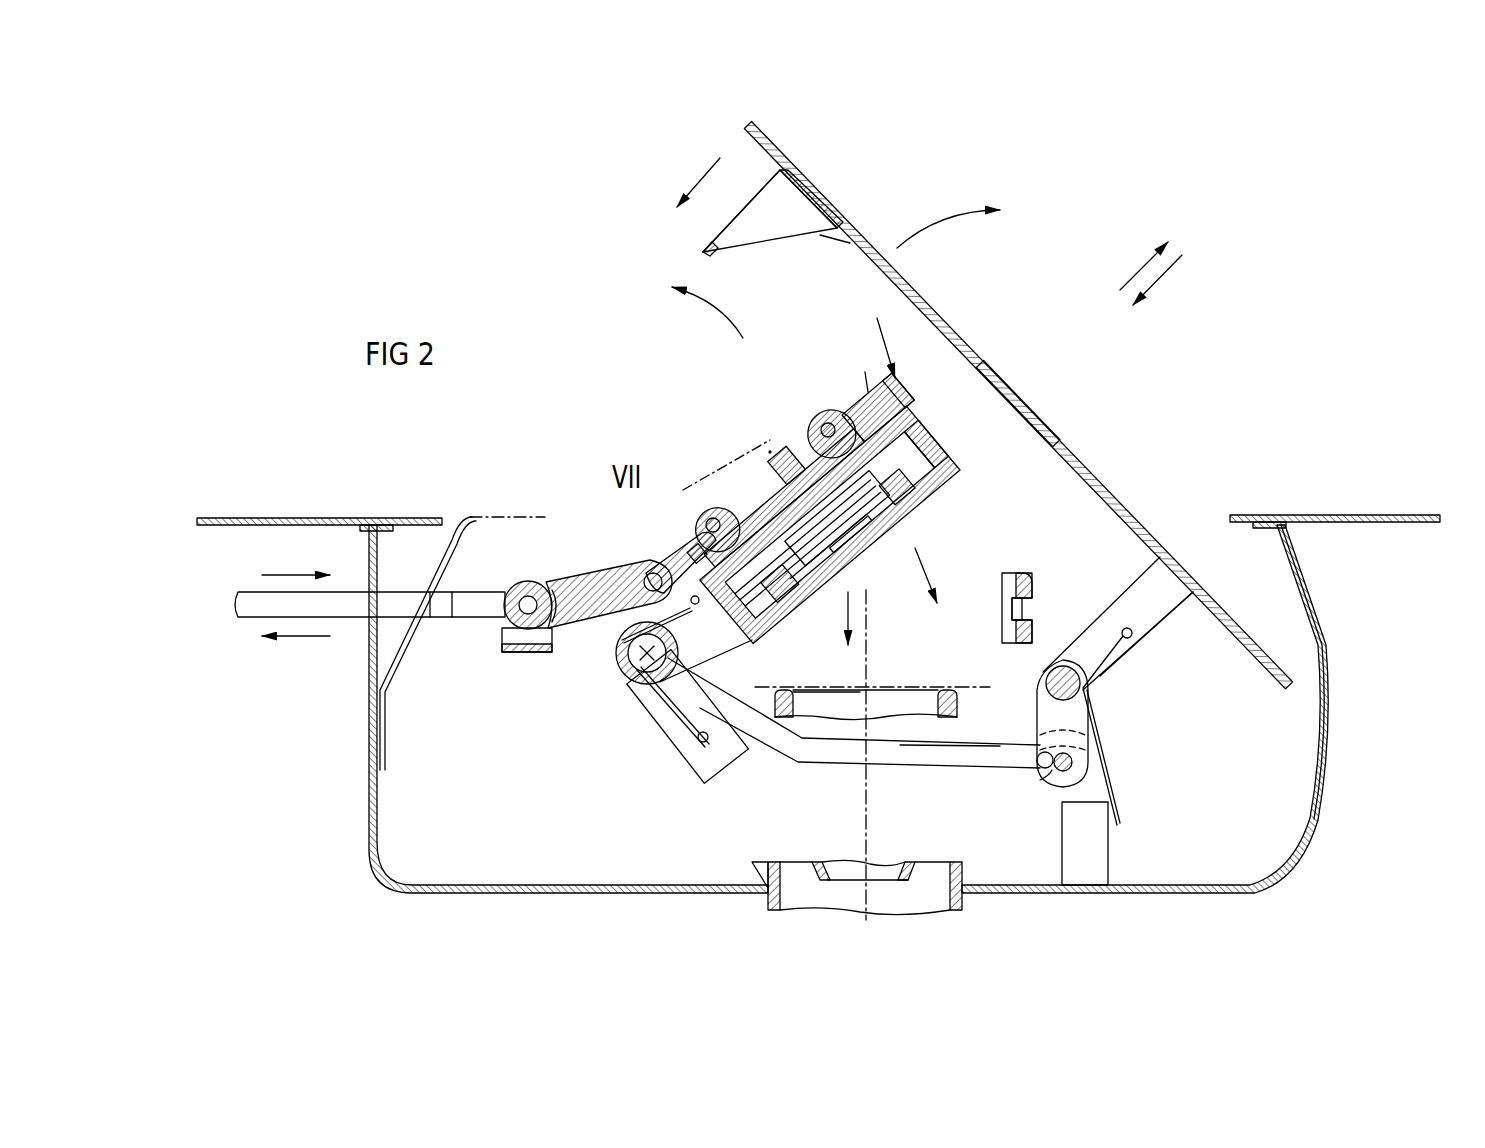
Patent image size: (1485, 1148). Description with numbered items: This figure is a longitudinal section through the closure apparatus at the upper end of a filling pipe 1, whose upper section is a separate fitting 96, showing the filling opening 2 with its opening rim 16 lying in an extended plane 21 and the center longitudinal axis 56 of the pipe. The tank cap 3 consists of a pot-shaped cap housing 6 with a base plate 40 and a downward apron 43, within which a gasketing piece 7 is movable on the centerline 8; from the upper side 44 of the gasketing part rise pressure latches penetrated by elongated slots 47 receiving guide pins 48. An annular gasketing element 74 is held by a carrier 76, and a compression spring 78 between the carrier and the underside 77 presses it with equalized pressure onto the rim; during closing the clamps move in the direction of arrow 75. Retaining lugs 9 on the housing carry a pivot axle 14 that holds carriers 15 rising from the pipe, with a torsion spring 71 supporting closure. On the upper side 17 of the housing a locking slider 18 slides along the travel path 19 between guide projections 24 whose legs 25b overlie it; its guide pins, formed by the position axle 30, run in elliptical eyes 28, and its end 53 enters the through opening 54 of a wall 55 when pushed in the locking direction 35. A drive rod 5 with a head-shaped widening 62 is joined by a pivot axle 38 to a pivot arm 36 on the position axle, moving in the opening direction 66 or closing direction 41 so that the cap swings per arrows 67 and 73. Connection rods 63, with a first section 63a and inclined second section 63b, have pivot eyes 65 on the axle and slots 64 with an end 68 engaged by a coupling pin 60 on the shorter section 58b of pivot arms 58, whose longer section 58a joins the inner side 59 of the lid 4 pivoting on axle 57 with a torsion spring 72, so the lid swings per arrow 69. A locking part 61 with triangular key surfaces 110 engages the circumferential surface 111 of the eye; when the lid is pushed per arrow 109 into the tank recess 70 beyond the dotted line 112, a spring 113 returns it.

The filling pipe 1 is at (808, 905).
The filling opening 2 is at (930, 690).
The tank cap 3 is at (1000, 425).
The lid of the tank recess 4 is at (1045, 460).
The drive rod 5 is at (248, 620).
The cap housing 6 is at (905, 425).
The gasketing piece 7 is at (968, 452).
The centerline of the cap 8 is at (772, 440).
The retaining lugs 9 is at (645, 570).
The pivot axle 14 is at (635, 690).
The carriers 15 is at (668, 748).
The opening rim 16 is at (835, 690).
The upper side of the cap housing 17 is at (790, 455).
The locking slider 18 is at (878, 330).
The travel path 19 is at (1162, 275).
The extended plane of the opening rim 21 is at (795, 688).
The guide projections 24 is at (760, 470).
The leg of the guide projection 25b is at (770, 452).
The second pivot eyes 28 is at (675, 548).
The position axle 30 is at (695, 606).
The locking direction 35 is at (1140, 272).
The pivot arm 36 is at (590, 568).
The pivot axle 38 is at (548, 580).
The base plate 40 is at (869, 363).
The closing direction 41 is at (285, 575).
The apron 43 is at (745, 672).
The upper side of the gasketing part 44 is at (833, 405).
The elongated slots 47 is at (695, 510).
The guide pins 48 is at (705, 520).
The end of the locking slider 53 is at (905, 382).
The through opening 54 is at (1022, 610).
The wall 55 is at (1012, 573).
The center longitudinal axis of the filling pipe 56 is at (870, 680).
The pivot axle 57 is at (1046, 680).
The pivot arms 58 is at (1130, 582).
The longer section of the pivot arm 58a is at (1165, 598).
The shorter section of the pivot arm 58b is at (1045, 720).
The inner side of the lid 59 is at (846, 243).
The coupling pin 60 is at (1060, 790).
The locking part 61 is at (735, 220).
The head shaped widening 62 is at (448, 620).
The connection rods 63 is at (905, 762).
The first section of the connection rod 63a is at (965, 770).
The second section of the connection rod 63b is at (590, 640).
The elongated slots 64 is at (1030, 785).
The pivot eye 65 is at (518, 585).
The opening direction 66 is at (305, 640).
The arrow 67 is at (730, 315).
The end of the slot 68 is at (1072, 762).
The arrow 69 is at (940, 235).
The tank recess 70 is at (1262, 583).
The torsion spring 71 is at (715, 775).
The torsion spring 72 is at (1110, 670).
The arrow 73 is at (945, 572).
The gasketing element 74 is at (905, 495).
The arrow 75 is at (855, 620).
The carrier 76 is at (860, 565).
The underside of the gasketing part 77 is at (880, 520).
The compression spring 78 is at (815, 585).
The fitting 96 is at (798, 870).
The arrow 109 is at (715, 170).
The triangular key surfaces 110 is at (760, 262).
The circumferential surface of the pivot eye 111 is at (508, 655).
The dotted line 112 is at (488, 517).
The spring 113 is at (395, 660).